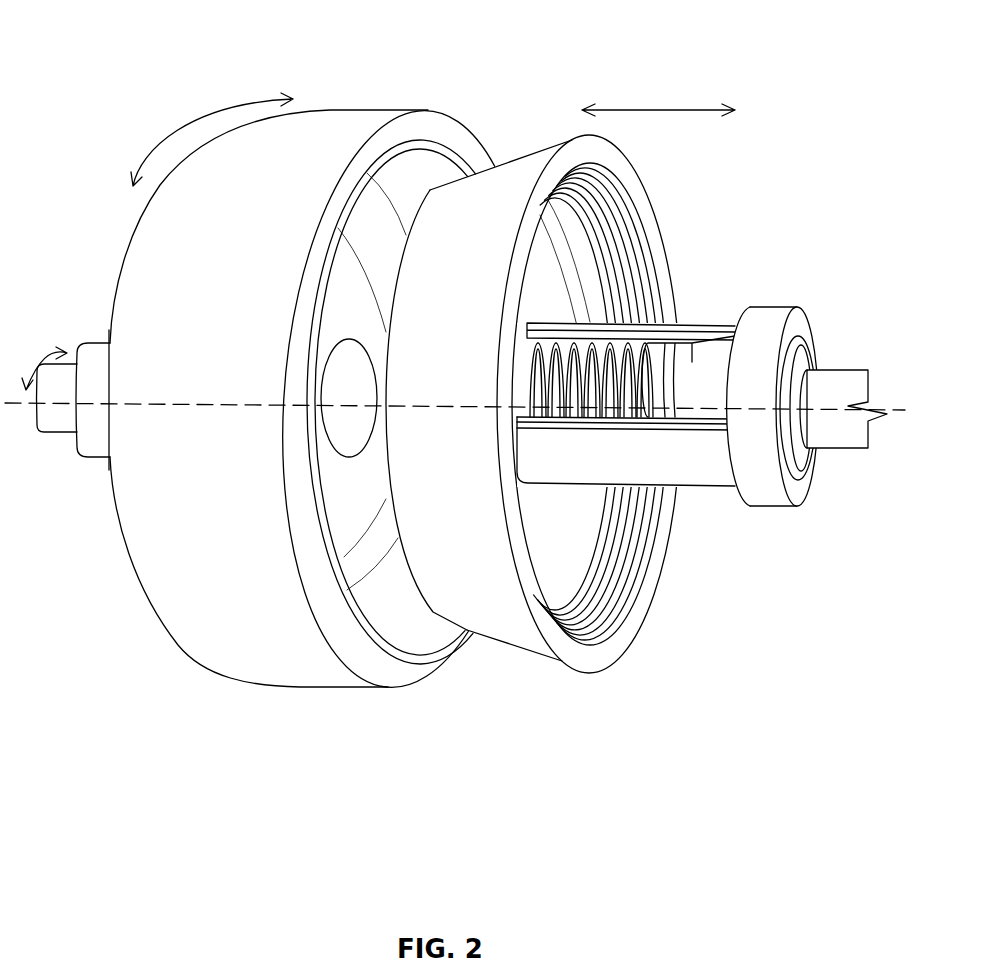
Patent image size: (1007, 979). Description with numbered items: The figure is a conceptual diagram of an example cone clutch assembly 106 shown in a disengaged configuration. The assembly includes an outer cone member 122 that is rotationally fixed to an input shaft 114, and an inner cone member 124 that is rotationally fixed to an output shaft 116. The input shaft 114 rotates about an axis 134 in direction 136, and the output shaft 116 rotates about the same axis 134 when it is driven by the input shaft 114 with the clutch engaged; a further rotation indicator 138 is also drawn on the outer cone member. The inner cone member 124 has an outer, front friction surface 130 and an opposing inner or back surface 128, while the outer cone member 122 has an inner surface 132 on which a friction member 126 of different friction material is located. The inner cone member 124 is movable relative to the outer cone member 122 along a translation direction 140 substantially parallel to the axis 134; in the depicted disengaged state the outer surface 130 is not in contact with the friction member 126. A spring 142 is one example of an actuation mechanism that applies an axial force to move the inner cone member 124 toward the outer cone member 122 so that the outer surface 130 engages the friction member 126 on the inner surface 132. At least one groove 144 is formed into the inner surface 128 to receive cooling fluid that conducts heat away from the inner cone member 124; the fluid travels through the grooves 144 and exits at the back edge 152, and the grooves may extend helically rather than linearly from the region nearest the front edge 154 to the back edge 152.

The cone clutch assembly 106 is at (719, 34).
The input shaft 114 is at (60, 427).
The output shaft 116 is at (833, 380).
The outer cone member 122 is at (267, 663).
The inner cone member 124 is at (505, 178).
The friction member 126 is at (450, 150).
The inner surface 128 is at (605, 595).
The outer surface 130 is at (497, 620).
The inner surface 132 is at (370, 603).
The axis 134 is at (12, 403).
The direction 136 is at (44, 349).
The rotation direction of drum 138 is at (167, 127).
The translation direction 140 is at (652, 110).
The spring 142 is at (650, 345).
The groove 144 is at (623, 235).
The back edge 152 is at (655, 558).
The front edge 154 is at (388, 476).